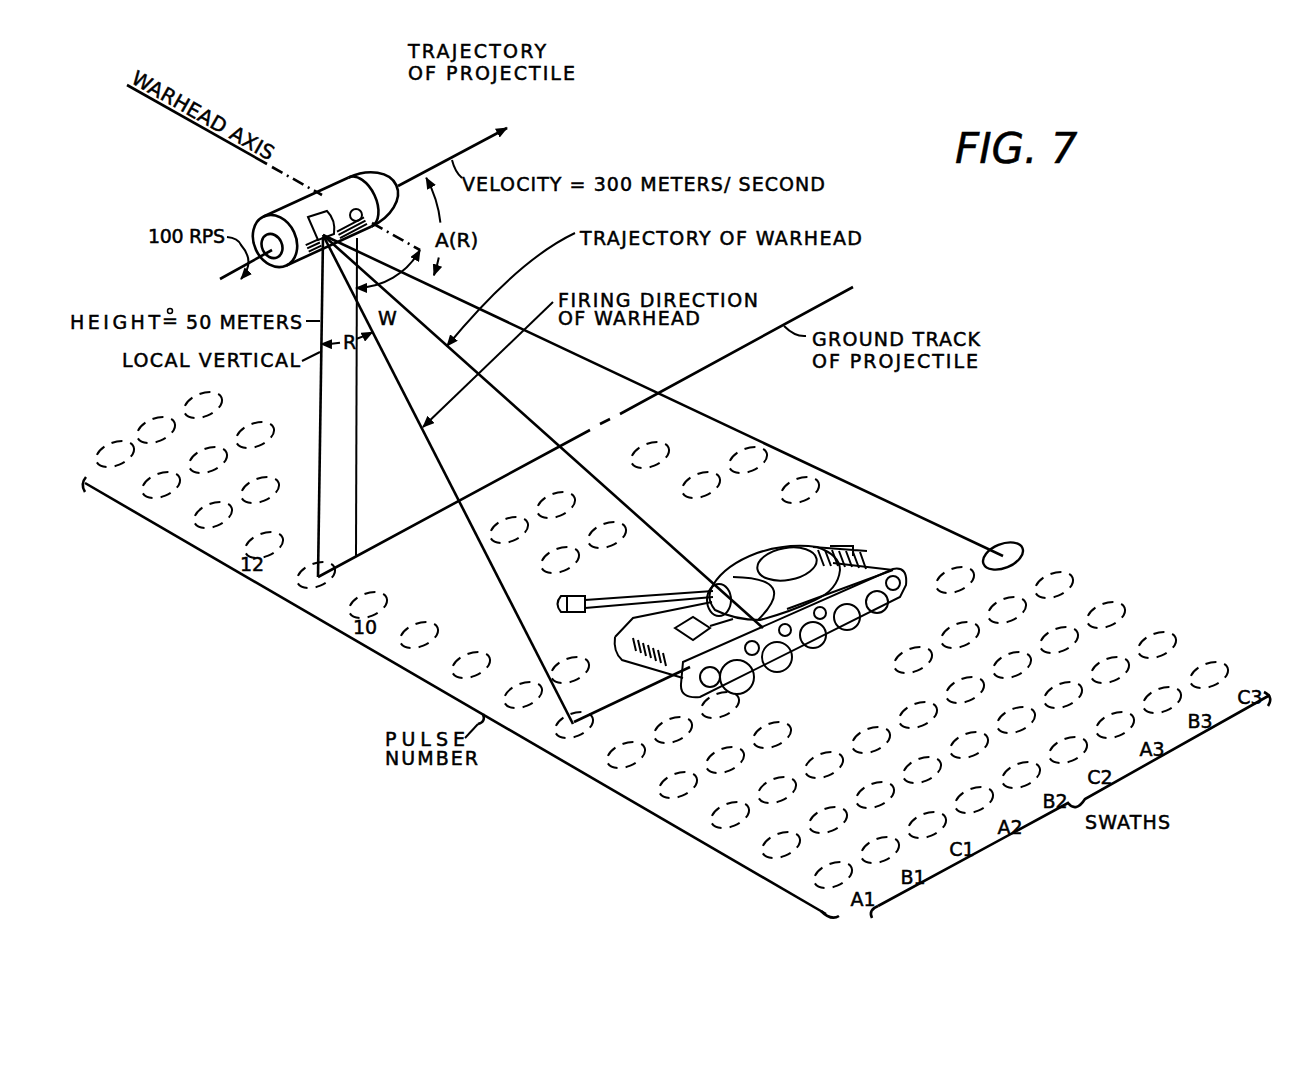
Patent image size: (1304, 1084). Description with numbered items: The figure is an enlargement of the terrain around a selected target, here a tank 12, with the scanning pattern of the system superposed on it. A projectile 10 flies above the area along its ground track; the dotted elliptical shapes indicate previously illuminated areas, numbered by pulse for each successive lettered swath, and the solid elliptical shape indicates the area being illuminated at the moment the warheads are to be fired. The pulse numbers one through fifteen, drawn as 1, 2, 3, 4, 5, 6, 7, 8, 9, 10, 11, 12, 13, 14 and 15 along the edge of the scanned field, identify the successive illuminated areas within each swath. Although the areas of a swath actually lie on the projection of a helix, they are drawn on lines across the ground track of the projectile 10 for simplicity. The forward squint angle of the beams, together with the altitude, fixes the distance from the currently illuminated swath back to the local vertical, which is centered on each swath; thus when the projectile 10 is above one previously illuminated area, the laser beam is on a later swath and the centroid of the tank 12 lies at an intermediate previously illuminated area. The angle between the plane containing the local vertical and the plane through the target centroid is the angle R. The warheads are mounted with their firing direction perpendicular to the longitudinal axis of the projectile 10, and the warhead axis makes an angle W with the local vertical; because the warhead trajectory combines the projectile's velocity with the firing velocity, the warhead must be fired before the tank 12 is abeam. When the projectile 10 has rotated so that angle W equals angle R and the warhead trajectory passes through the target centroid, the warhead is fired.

The projectile 10 is at (470, 146).
The tank 12 is at (788, 554).
The pulse 1 footprint 1 is at (833, 883).
The pulse 2 footprint 2 is at (781, 854).
The pulse 3 footprint 3 is at (730, 824).
The pulse 4 footprint 4 is at (678, 792).
The pulse 5 footprint 5 is at (626, 763).
The pulse 6 footprint 6 is at (574, 734).
The pulse 7 footprint 7 is at (523, 704).
The pulse 8 footprint 8 is at (471, 673).
The pulse 9 footprint 9 is at (419, 642).
The pulse 11 footprint 11 is at (316, 582).
The pulse 13 footprint 13 is at (213, 521).
The pulse 14 footprint 14 is at (159, 489).
The pulse 15 footprint 15 is at (115, 463).